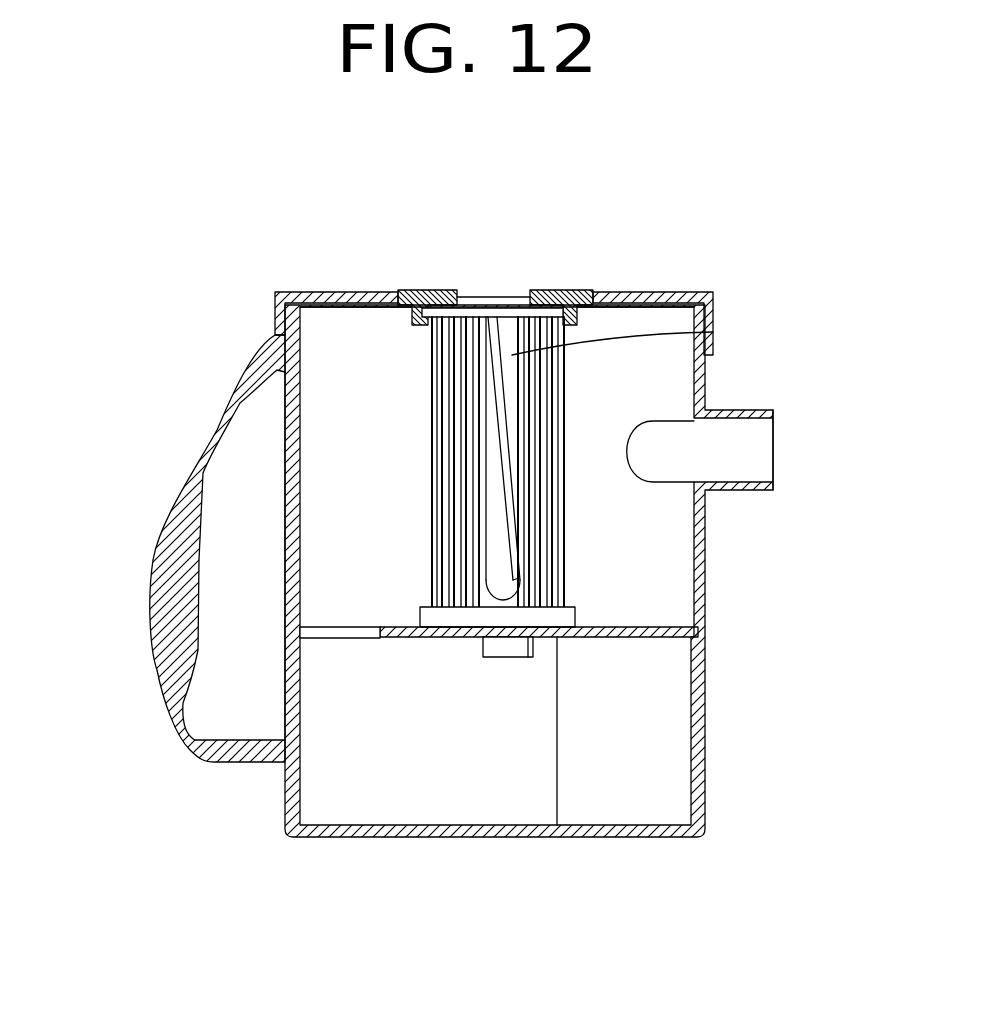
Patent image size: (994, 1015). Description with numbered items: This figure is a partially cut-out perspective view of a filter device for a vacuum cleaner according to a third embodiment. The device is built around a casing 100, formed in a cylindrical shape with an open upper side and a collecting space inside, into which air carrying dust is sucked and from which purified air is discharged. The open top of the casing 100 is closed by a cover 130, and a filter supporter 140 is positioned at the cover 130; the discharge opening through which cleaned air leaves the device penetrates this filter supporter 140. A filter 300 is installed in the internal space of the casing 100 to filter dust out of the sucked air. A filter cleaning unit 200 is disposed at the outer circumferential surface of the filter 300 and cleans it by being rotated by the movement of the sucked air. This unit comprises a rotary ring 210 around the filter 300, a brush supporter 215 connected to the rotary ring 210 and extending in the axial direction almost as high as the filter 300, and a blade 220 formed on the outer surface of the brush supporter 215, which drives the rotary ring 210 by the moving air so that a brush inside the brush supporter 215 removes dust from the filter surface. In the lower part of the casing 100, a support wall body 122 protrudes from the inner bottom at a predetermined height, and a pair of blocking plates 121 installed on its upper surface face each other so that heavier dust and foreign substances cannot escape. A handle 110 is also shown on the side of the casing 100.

The casing 100 is at (712, 362).
The handle 110 is at (163, 580).
The blocking plates 121 is at (657, 638).
The support wall body 122 is at (528, 765).
The cover 130 is at (350, 292).
The filter supporter 140 is at (570, 291).
The filter cleaning unit 200 is at (535, 540).
The rotary ring 210 is at (538, 290).
The brush supporter 215 is at (713, 332).
The blade 220 is at (512, 517).
The filter 300 is at (458, 296).